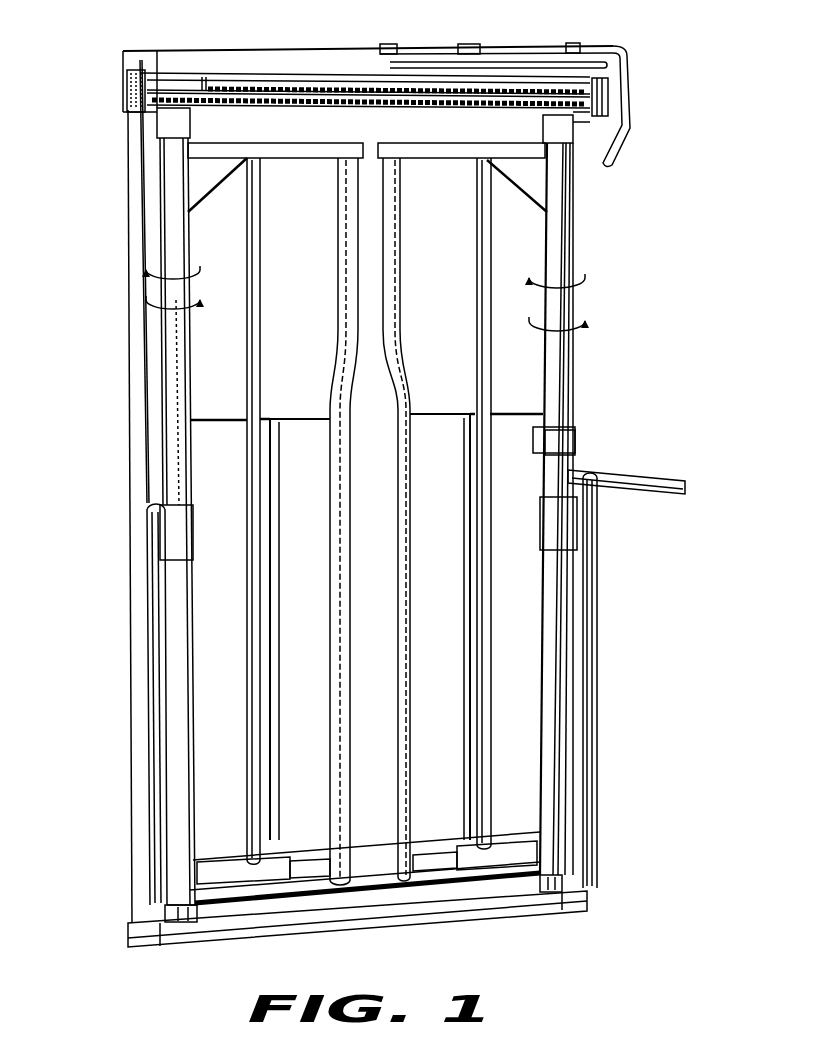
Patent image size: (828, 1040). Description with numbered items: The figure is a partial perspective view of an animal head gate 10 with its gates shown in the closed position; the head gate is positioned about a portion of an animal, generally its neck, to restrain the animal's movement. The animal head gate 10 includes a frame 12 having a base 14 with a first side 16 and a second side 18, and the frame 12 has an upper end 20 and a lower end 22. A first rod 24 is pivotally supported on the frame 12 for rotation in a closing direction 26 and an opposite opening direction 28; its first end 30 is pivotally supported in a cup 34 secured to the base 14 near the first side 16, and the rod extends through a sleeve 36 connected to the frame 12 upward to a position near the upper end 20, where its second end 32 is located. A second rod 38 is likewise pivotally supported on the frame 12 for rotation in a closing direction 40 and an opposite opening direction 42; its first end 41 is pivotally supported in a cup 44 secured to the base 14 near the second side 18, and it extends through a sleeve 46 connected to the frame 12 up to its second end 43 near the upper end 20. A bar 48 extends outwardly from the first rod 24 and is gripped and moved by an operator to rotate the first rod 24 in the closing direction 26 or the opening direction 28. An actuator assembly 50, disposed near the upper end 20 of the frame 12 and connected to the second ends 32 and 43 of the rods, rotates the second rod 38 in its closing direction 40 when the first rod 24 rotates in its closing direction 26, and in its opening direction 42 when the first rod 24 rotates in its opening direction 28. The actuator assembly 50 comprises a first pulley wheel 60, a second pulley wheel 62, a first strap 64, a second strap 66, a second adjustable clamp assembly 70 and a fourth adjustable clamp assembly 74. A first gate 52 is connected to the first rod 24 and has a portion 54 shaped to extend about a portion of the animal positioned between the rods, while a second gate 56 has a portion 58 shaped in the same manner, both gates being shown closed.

The animal head gate 10 is at (587, 390).
The frame 12 is at (128, 663).
The base 14 is at (330, 920).
The first side 16 is at (593, 903).
The second side 18 is at (127, 937).
The upper end 20 is at (234, 46).
The lower end 22 is at (197, 940).
The first rod 24 is at (563, 417).
The closing direction 26 is at (583, 280).
The opening direction 28 is at (583, 325).
The first end 30 is at (557, 872).
The second end 32 is at (575, 133).
The cup 34 is at (547, 883).
The sleeve 36 is at (557, 533).
The second rod 38 is at (172, 400).
The closing direction 40 is at (150, 318).
The first end 41 is at (167, 902).
The opening direction 42 is at (145, 285).
The second end 43 is at (163, 128).
The cup 44 is at (180, 916).
The sleeve 46 is at (175, 538).
The bar 48 is at (627, 480).
The actuator assembly 50 is at (275, 68).
The first gate 52 is at (430, 537).
The portion of the first gate 54 is at (403, 350).
The second gate 56 is at (310, 460).
The portion of the second gate 58 is at (337, 358).
The first pulley wheel 60 is at (547, 110).
The second pulley wheel 62 is at (200, 112).
The first strap 64 is at (380, 117).
The second strap 66 is at (337, 75).
The second adjustable clamp assembly 70 is at (609, 95).
The fourth adjustable clamp assembly 74 is at (124, 90).